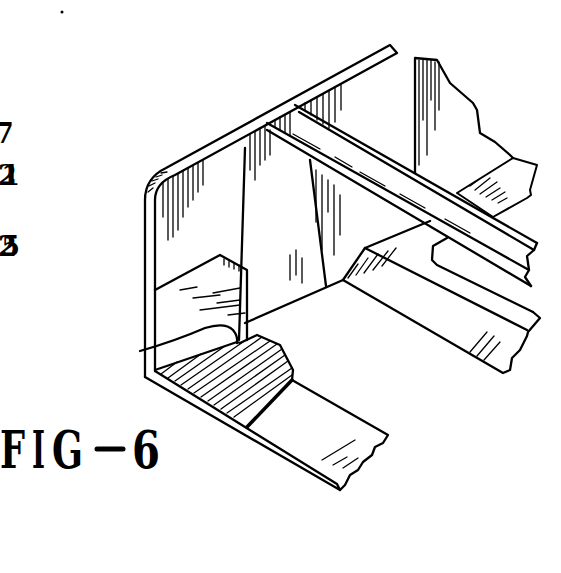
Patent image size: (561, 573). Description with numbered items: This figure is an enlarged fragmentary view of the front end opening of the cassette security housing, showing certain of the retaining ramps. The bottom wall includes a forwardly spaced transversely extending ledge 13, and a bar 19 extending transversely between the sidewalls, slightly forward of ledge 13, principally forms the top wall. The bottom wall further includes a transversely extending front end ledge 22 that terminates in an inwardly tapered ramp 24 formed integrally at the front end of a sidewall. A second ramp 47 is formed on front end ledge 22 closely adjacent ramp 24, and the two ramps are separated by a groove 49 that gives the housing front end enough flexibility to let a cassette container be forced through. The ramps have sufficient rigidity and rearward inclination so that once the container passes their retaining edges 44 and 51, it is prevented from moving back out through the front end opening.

The ledge 13 is at (437, 308).
The bar 19 is at (310, 130).
The front end ledge 22 is at (327, 437).
The ramp 24 is at (190, 303).
The retaining edge 44 is at (258, 280).
The ramp 47 is at (248, 375).
The groove 49 is at (140, 351).
The retaining edge 51 is at (273, 340).